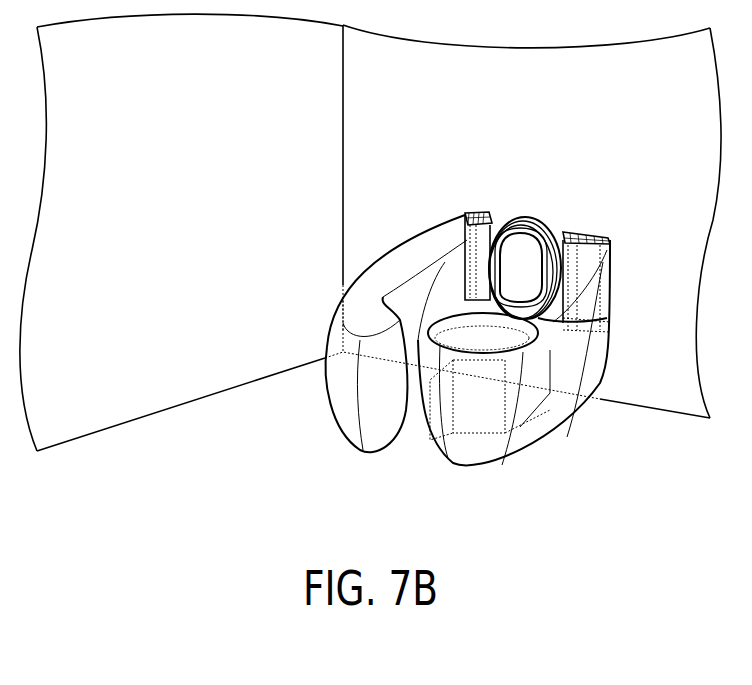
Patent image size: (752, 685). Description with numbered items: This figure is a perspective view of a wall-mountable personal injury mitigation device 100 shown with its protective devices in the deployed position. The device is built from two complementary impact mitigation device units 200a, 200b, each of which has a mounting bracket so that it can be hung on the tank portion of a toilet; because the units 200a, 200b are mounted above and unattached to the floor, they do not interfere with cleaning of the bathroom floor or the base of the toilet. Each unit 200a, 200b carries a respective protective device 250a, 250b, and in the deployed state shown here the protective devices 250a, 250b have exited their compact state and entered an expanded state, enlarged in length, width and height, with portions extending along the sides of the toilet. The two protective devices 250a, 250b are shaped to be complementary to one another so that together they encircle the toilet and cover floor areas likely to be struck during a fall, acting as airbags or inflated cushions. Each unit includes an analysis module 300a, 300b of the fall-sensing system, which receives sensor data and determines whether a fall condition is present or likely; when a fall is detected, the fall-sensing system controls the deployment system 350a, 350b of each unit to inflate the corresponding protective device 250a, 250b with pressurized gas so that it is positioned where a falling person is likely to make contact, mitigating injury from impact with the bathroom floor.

The personal injury mitigation device 100 is at (580, 158).
The impact mitigation device unit 200a is at (495, 222).
The impact mitigation device unit 200b is at (583, 230).
The protective device 250a is at (360, 292).
The protective device 250b is at (600, 343).
The analysis module 300a is at (465, 221).
The analysis module 300b is at (600, 247).
The deployment system 350a is at (490, 222).
The deployment system 350b is at (603, 237).